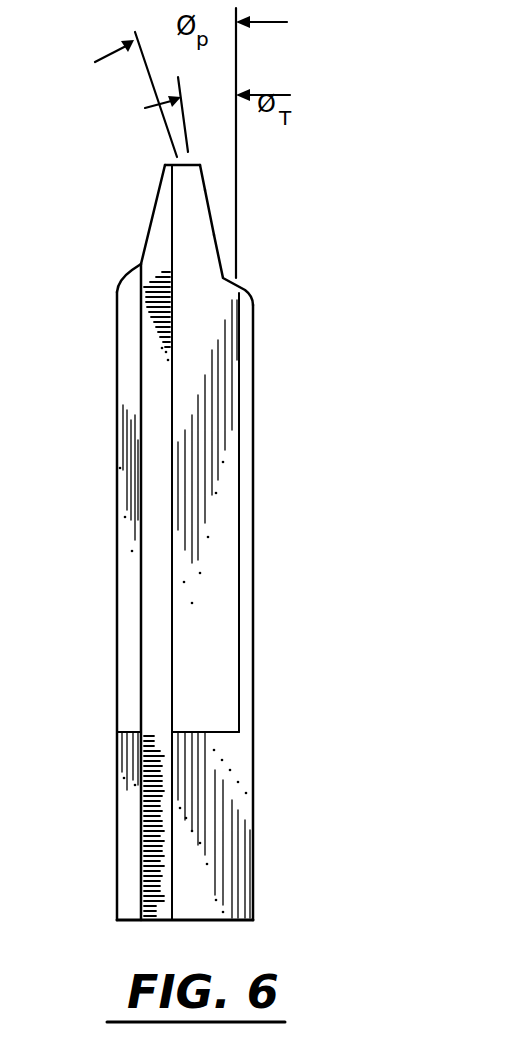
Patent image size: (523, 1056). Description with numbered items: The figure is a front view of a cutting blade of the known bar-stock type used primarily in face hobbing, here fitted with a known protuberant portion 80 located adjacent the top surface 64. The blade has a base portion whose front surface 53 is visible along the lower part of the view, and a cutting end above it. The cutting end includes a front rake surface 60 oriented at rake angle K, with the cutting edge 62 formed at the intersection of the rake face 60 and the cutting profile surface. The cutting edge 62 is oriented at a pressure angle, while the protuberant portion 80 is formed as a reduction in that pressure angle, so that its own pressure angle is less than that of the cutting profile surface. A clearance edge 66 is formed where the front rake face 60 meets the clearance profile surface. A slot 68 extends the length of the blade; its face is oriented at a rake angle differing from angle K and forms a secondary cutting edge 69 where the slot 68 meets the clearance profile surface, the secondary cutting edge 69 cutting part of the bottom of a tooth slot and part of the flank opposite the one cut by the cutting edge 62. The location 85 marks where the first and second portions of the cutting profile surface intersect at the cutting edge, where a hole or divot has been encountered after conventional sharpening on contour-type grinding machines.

The front surface 53 is at (128, 843).
The front rake surface 60 is at (127, 327).
The cutting edge 62 is at (213, 241).
The top surface 64 is at (170, 163).
The clearance edge 66 is at (138, 270).
The slot 68 is at (157, 450).
The secondary cutting edge 69 is at (147, 226).
The protuberant portion 80 is at (194, 160).
The location of intersection 85 is at (197, 196).